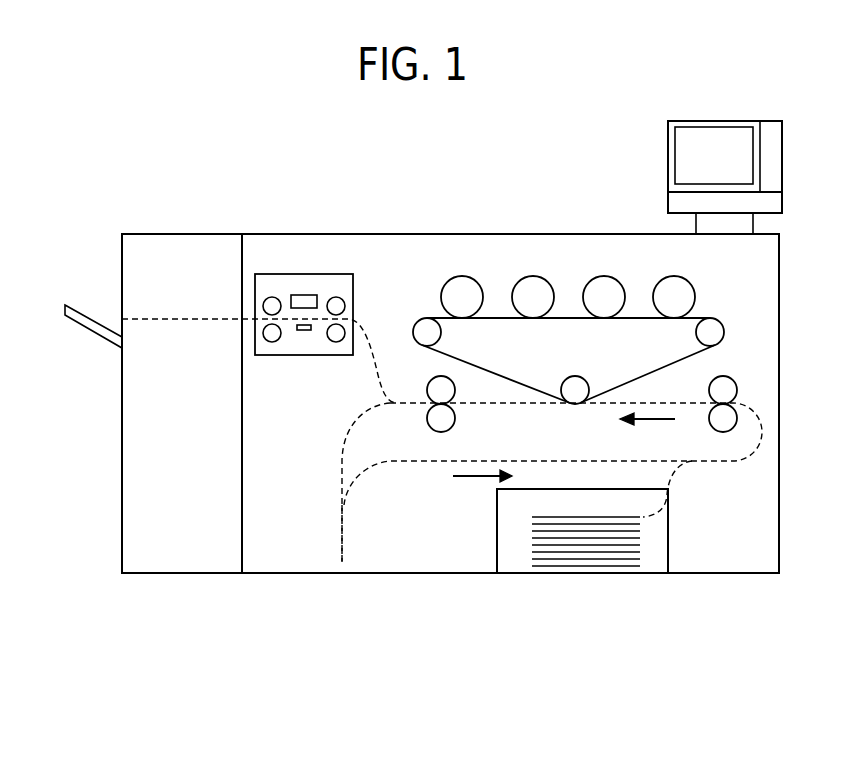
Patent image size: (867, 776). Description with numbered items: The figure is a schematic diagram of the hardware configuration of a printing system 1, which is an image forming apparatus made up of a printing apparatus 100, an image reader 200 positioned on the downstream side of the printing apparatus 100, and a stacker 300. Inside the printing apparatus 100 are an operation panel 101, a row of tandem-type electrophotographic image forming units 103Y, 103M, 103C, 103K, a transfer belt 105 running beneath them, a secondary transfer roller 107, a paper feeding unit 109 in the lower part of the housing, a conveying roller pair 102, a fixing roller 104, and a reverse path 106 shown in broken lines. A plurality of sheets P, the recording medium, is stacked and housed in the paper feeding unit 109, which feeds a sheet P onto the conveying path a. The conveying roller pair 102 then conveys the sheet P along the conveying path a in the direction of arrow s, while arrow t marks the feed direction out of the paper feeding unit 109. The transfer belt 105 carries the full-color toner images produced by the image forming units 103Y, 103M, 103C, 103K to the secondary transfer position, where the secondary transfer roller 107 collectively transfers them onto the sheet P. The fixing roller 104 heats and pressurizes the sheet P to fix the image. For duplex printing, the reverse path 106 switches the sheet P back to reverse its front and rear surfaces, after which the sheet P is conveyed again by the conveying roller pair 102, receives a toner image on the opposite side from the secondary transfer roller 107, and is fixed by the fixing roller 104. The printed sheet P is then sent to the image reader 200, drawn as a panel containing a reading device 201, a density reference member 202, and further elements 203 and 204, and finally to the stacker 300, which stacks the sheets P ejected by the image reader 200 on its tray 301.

The printing system 1 is at (110, 152).
The printing apparatus 100 is at (521, 234).
The operation panel 101 is at (668, 153).
The conveying roller pair 102 is at (732, 378).
The image forming unit 103K is at (452, 279).
The image forming unit 103C is at (522, 279).
The image forming unit 103M is at (593, 279).
The image forming unit 103Y is at (663, 279).
The fixing roller 104 is at (430, 378).
The transfer belt 105 is at (488, 375).
The reverse path 106 is at (343, 542).
The secondary transfer roller 107 is at (577, 376).
The paper feeding unit 109 is at (497, 544).
The image reader 200 is at (318, 274).
The reading device 201 is at (300, 295).
The density reference member 202 is at (306, 332).
The operation button 203 is at (337, 297).
The operation button 204 is at (276, 343).
The stacker 300 is at (182, 234).
The tray 301 is at (98, 332).
The sheet P is at (545, 516).
The conveying path a is at (722, 461).
The arrow s is at (647, 433).
The sheet feeding direction t is at (482, 487).